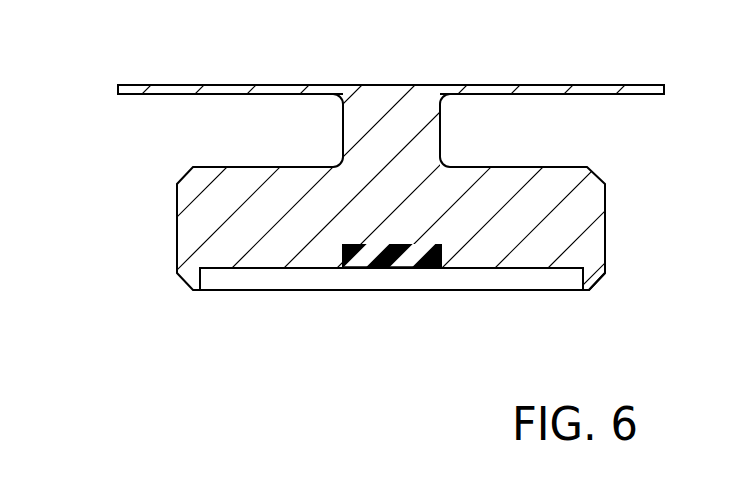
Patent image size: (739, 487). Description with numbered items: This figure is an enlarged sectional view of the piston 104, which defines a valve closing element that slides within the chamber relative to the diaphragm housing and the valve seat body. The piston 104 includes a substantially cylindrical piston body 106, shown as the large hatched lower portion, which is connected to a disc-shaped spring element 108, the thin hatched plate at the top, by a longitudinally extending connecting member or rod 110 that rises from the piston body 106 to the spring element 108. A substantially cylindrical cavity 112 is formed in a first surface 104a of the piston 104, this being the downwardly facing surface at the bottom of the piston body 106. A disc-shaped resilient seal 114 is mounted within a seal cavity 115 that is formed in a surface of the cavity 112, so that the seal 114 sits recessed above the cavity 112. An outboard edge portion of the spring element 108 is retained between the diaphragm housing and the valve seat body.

The piston 104 is at (123, 178).
The first surface 104a is at (588, 290).
The piston body 106 is at (177, 230).
The spring element 108 is at (220, 84).
The connecting member or rod 110 is at (443, 132).
The cavity 112 is at (202, 280).
The resilient seal 114 is at (417, 260).
The seal cavity 115 is at (357, 268).